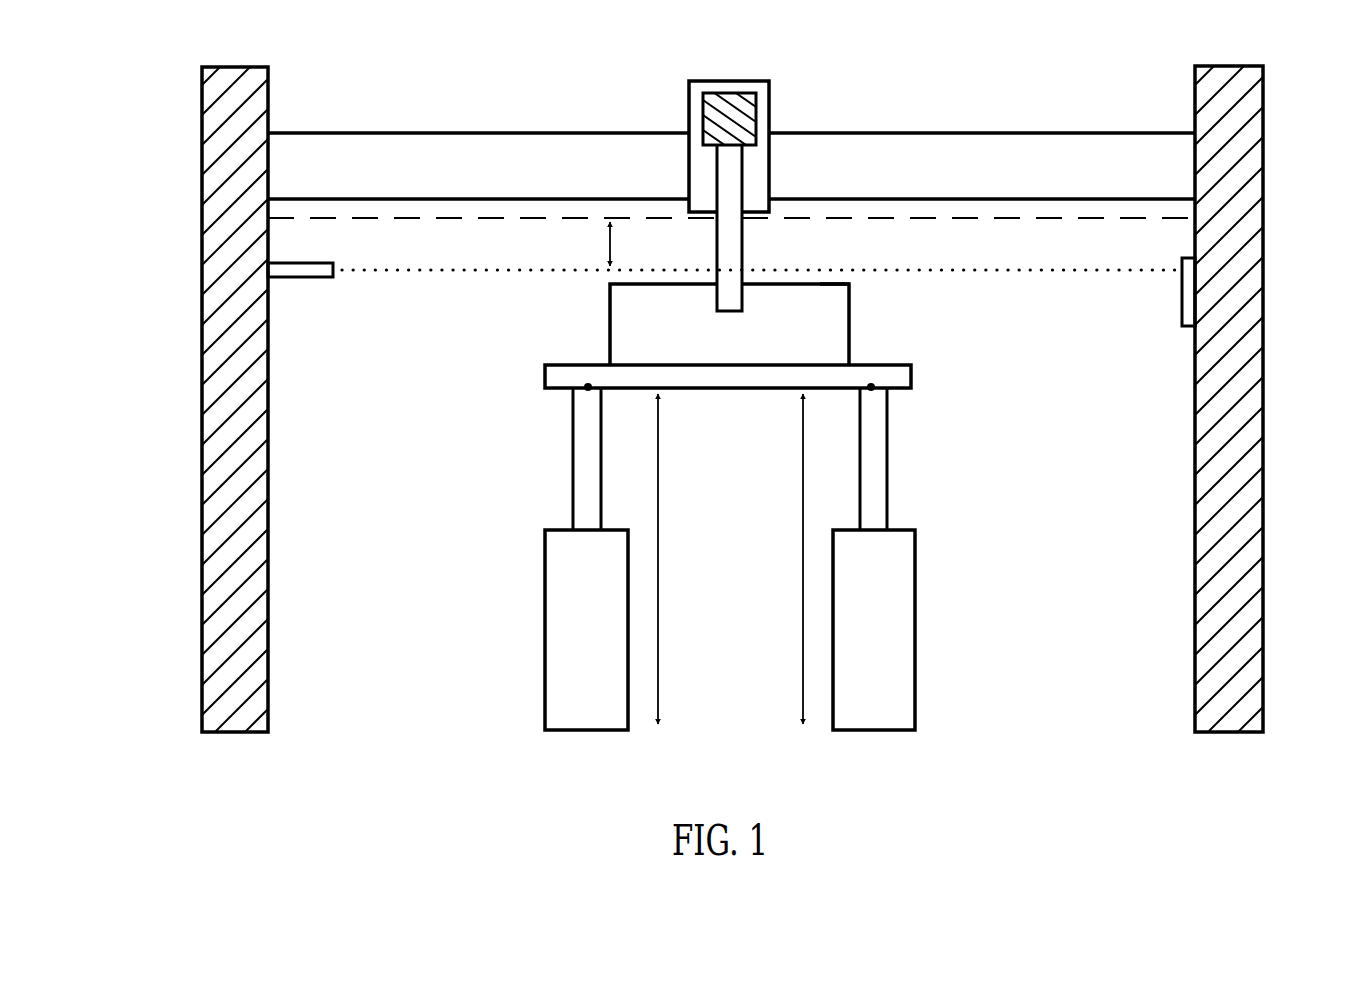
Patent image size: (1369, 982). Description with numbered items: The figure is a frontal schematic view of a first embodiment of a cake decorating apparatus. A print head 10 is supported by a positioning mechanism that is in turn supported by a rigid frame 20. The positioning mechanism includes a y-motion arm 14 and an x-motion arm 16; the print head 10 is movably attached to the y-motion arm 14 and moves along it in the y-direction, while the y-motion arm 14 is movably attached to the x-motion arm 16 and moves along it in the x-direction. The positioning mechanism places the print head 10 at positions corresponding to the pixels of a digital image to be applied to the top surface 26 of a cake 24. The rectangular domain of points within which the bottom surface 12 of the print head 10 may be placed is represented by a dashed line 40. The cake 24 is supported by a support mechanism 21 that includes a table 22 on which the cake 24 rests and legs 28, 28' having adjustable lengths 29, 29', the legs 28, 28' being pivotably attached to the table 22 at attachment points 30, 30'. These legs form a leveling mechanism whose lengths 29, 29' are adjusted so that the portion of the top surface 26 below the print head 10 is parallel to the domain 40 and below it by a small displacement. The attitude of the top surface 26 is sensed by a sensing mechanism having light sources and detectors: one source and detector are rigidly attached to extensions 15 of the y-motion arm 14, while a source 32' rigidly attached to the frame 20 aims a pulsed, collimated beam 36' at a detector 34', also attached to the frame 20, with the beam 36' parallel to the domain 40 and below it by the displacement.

The print head 10 is at (757, 162).
The bottom surface 12 is at (752, 213).
The y-motion arm 14 is at (728, 110).
The extensions 15 is at (720, 240).
The x-motion arm 16 is at (458, 152).
The rigid frame 20 is at (217, 480).
The support mechanism 21 is at (976, 575).
The table 22 is at (913, 383).
The cake 24 is at (800, 341).
The top surface 26 is at (846, 283).
The leg 28 is at (586, 630).
The leg 28' is at (874, 630).
The adjustable length 29 is at (700, 559).
The adjustable length 29' is at (758, 559).
The attachment point 30 is at (544, 456).
The attachment point 30' is at (921, 456).
The source 32' is at (335, 333).
The detector 34' is at (1140, 326).
The beam 36' is at (760, 331).
The dashed line 40 is at (492, 217).